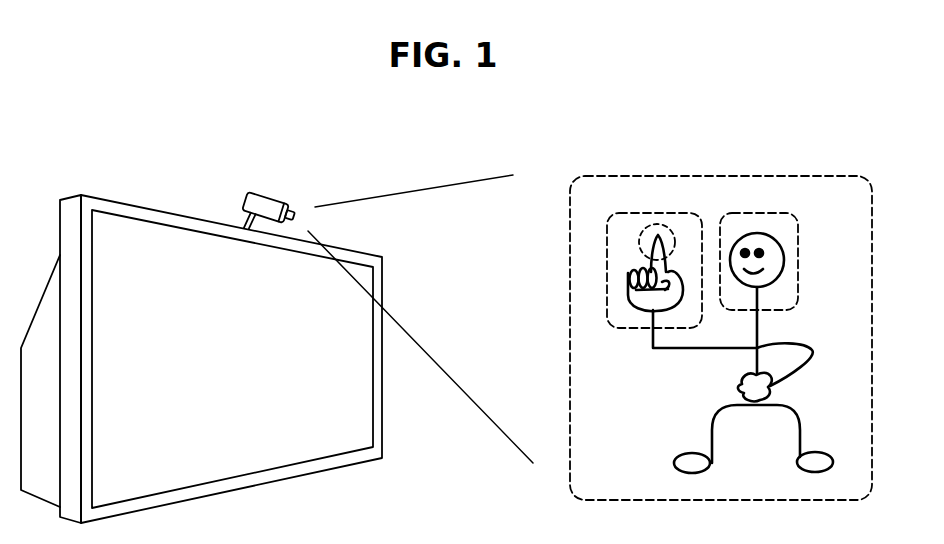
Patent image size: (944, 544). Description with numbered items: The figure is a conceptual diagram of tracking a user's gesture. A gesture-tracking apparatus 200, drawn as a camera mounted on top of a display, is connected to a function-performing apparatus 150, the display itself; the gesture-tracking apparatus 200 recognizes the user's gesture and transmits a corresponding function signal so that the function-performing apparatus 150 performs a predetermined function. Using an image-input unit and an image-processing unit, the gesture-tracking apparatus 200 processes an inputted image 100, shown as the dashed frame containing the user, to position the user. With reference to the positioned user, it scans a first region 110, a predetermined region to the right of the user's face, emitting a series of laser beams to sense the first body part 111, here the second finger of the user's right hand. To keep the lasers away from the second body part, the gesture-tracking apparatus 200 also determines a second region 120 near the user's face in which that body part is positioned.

The inputted image 100 is at (717, 175).
The first region 110 is at (622, 331).
The first body part 111 is at (640, 218).
The second region 120 is at (798, 245).
The function-performing apparatus 150 is at (157, 208).
The gesture-tracking apparatus 200 is at (274, 197).